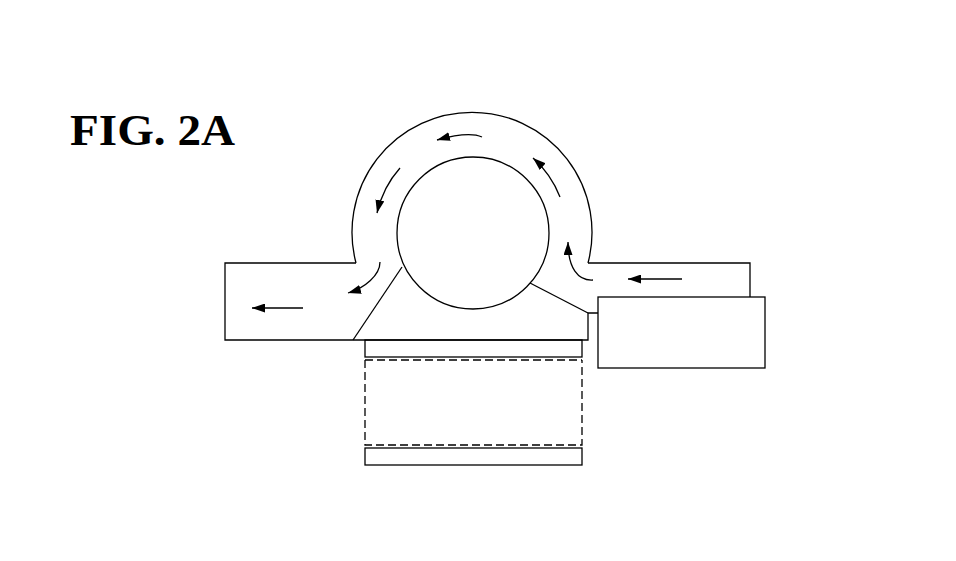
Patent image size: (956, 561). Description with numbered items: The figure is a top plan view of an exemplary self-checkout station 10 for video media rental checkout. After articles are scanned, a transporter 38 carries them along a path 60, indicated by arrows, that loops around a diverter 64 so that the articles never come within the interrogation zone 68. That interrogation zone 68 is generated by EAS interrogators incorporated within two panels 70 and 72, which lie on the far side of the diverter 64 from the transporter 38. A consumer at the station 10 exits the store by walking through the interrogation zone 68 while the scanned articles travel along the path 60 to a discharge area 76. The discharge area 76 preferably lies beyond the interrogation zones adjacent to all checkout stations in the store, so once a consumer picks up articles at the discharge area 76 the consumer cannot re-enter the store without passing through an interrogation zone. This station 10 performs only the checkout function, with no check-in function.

The station 10 is at (700, 368).
The transporter 38 is at (695, 263).
The path 60 is at (517, 122).
The diverter 64 is at (484, 242).
The interrogation zone 68 is at (365, 417).
The panel 70 is at (470, 358).
The panel 72 is at (417, 465).
The discharge area 76 is at (225, 305).